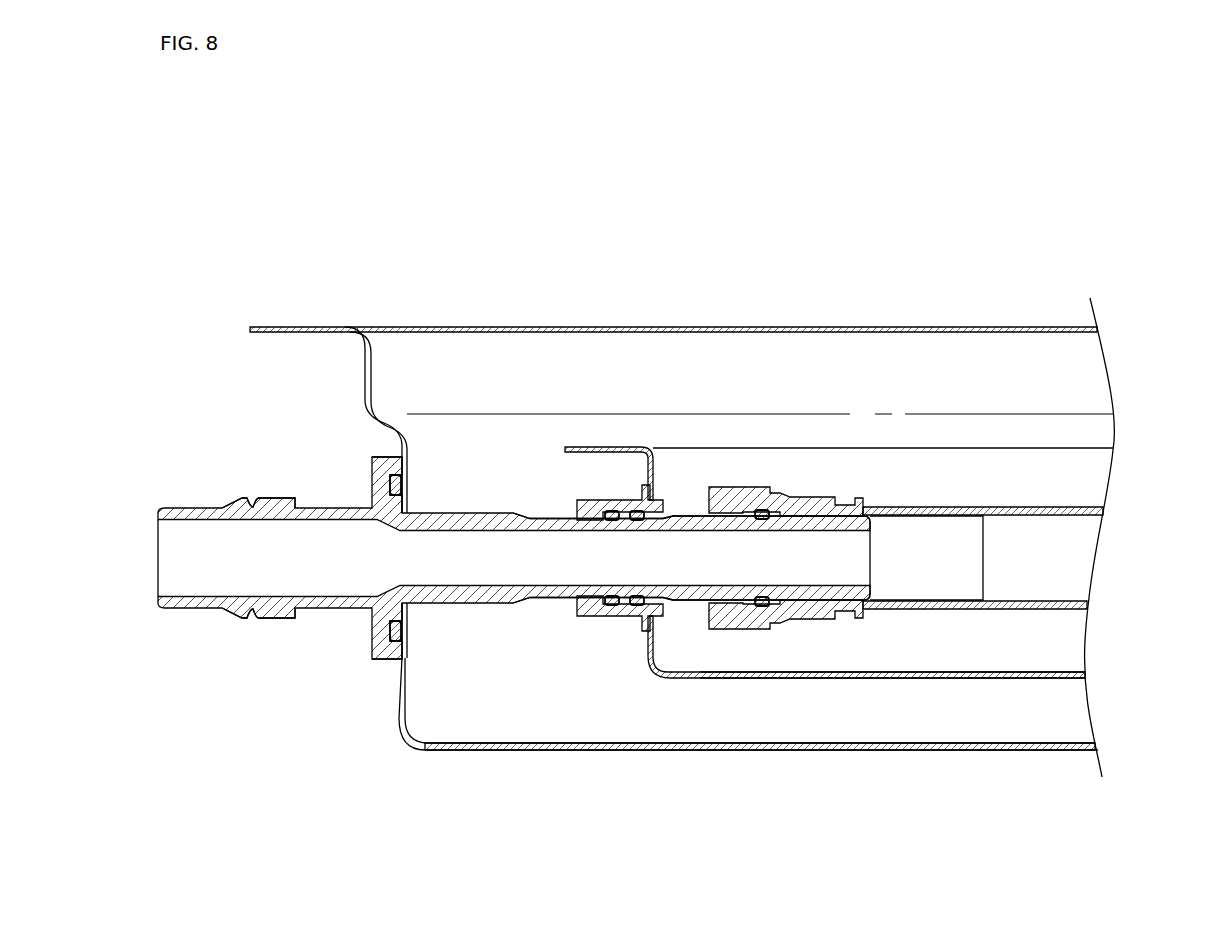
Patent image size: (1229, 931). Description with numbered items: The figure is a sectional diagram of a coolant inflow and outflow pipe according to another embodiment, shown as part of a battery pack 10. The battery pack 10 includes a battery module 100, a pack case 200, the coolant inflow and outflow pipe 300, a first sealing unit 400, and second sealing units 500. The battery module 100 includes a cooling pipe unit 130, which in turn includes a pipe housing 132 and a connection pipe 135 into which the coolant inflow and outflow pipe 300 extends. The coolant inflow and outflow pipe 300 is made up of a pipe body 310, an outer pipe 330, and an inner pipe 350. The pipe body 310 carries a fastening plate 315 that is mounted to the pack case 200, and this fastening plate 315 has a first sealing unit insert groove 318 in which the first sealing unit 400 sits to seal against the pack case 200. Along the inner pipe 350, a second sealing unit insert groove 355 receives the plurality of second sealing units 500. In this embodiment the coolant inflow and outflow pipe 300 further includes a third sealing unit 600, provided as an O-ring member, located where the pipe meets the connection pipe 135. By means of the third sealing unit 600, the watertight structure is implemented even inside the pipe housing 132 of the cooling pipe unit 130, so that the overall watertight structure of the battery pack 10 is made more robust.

The battery pack 10 is at (645, 300).
The battery module 100 is at (905, 537).
The cooling pipe unit 130 is at (1022, 558).
The pipe housing 132 is at (888, 678).
The connection pipe 135 is at (748, 630).
The pack case 200 is at (880, 328).
The coolant inflow and outflow pipe 300 is at (514, 601).
The pipe body 310 is at (331, 508).
The fastening plate 315 is at (378, 472).
The first sealing unit insert groove 318 is at (403, 474).
The outer pipe 330 is at (276, 499).
The inner pipe 350 is at (488, 600).
The second sealing unit insert groove 355 is at (607, 502).
The first sealing unit 400 is at (406, 486).
The second sealing unit 500 is at (613, 511).
The third sealing unit 600 is at (760, 510).